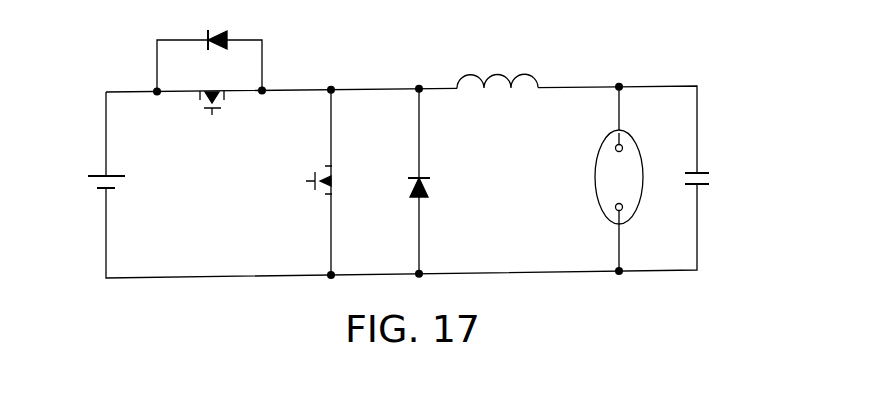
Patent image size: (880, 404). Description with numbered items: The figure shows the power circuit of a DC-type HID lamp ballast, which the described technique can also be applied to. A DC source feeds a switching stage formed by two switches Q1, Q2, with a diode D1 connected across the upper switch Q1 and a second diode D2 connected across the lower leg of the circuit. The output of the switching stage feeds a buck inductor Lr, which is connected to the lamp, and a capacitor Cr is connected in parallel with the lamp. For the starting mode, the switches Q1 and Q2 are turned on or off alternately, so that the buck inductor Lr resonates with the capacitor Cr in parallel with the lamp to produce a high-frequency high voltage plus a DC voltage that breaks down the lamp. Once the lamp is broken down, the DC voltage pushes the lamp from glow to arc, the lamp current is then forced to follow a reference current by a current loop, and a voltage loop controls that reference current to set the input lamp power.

The diode D1 is at (227, 61).
The switch Q1 is at (235, 124).
The switch Q2 is at (304, 182).
The diode D2 is at (438, 181).
The buck inductor Lr is at (497, 98).
The capacitor Cr is at (711, 180).